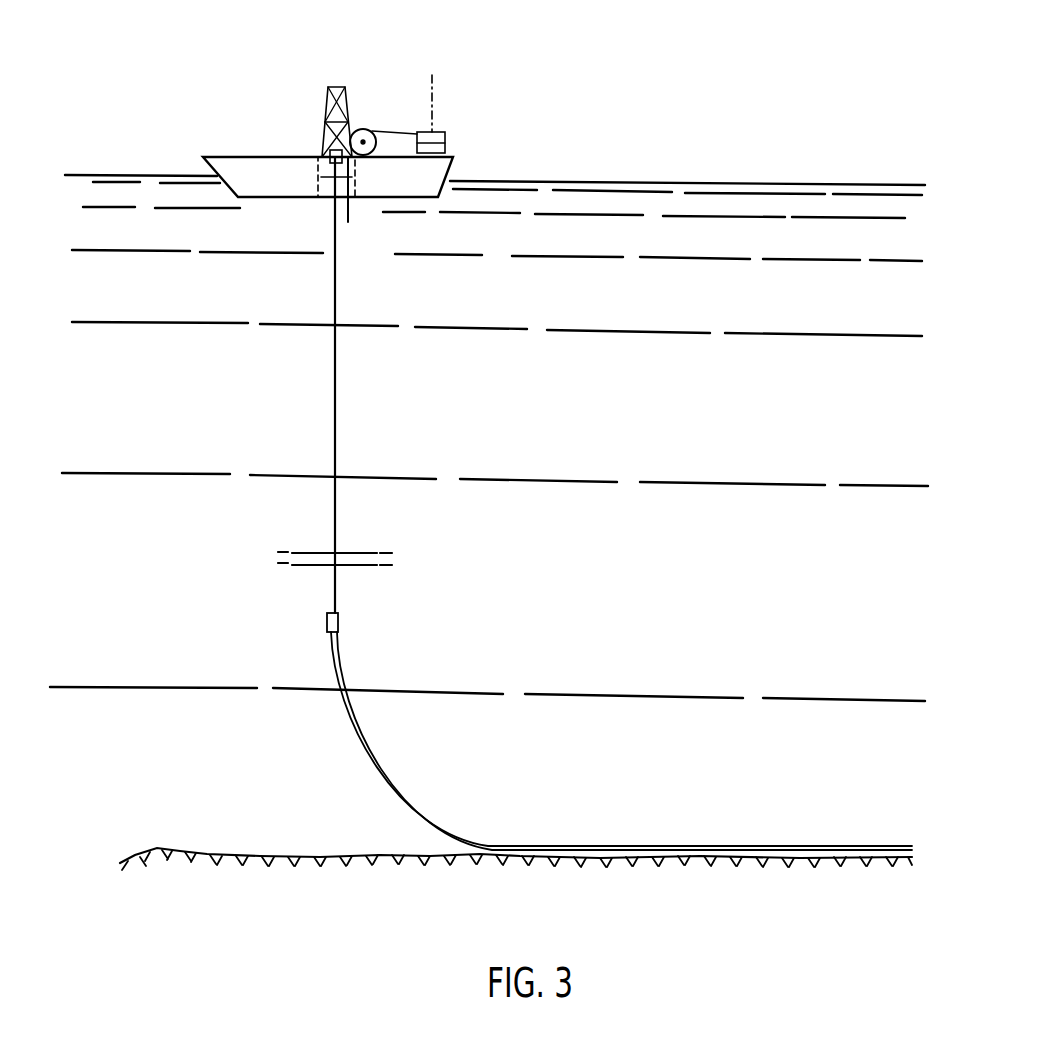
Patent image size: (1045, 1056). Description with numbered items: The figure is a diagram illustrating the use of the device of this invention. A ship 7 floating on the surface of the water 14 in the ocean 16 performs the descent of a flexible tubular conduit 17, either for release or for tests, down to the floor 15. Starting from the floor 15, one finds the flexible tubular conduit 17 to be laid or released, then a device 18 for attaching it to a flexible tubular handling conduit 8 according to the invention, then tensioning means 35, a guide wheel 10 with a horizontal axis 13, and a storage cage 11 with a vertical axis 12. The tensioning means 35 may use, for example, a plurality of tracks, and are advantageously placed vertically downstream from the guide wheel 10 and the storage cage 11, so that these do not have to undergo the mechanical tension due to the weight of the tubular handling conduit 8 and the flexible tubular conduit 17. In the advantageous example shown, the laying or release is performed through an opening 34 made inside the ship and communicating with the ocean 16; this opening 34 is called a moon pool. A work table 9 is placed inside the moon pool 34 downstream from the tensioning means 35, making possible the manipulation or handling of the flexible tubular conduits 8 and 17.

The ship 7 is at (302, 104).
The flexible tubular handling conduit 8 is at (336, 372).
The work table 9 is at (346, 206).
The guide wheel 10 is at (364, 140).
The storage cage 11 is at (446, 141).
The vertical axis 12 is at (434, 97).
The horizontal axis 13 is at (352, 130).
The surface of the water 14 is at (736, 182).
The floor 15 is at (221, 860).
The ocean 16 is at (793, 447).
The flexible tubular conduit 17 is at (396, 780).
The attaching device 18 is at (326, 622).
The opening 34 is at (310, 188).
The tensioning means 35 is at (328, 152).